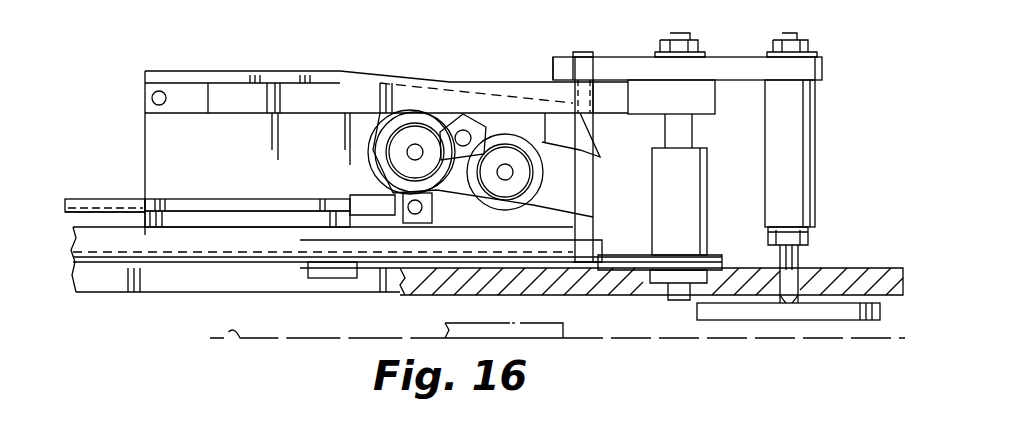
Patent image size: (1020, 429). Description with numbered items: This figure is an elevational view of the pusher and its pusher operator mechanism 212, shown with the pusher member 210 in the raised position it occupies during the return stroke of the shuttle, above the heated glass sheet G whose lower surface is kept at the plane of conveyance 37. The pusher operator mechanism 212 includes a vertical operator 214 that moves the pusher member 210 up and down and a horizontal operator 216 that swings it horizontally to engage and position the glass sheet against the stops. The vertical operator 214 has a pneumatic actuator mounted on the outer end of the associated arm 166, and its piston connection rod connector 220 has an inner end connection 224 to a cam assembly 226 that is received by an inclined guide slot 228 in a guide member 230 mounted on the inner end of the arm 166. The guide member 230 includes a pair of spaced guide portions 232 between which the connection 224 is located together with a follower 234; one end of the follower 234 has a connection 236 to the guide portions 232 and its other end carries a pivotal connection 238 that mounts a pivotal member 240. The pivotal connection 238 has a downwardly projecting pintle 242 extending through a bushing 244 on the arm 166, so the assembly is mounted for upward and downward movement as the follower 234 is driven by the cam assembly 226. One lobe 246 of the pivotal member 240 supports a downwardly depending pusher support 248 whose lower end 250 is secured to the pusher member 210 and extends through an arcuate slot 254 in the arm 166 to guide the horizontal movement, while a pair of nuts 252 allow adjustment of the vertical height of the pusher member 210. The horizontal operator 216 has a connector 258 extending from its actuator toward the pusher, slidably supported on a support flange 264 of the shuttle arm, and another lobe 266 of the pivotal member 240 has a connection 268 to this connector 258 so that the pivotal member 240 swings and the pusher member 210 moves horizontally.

The plane of conveyance 37 is at (235, 334).
The glass sheet G is at (550, 332).
The arm 166 is at (190, 278).
The pusher member 210 is at (820, 315).
The pusher operator mechanism 212 is at (128, 197).
The vertical operator 214 is at (264, 197).
The horizontal operator 216 is at (230, 227).
The piston connection rod connector 220 is at (87, 200).
The inner end connection 224 is at (410, 213).
The cam assembly 226 is at (390, 117).
The inclined guide slot 228 is at (557, 213).
The guide member 230 is at (227, 75).
The guide portions 232 is at (407, 76).
The follower 234 is at (295, 83).
The connection 236 is at (165, 92).
The pivotal connection 238 is at (693, 52).
The pivotal member 240 is at (635, 62).
The pintle 242 is at (690, 128).
The bushing 244 is at (705, 195).
The lobe 246 is at (820, 70).
The pusher support 248 is at (808, 118).
The lower end 250 is at (797, 270).
The nuts 252 is at (810, 45).
The arcuate slot 254 is at (785, 297).
The connector 258 is at (117, 235).
The support flange 264 is at (318, 268).
The lobe 266 is at (560, 60).
The connection 268 is at (587, 53).